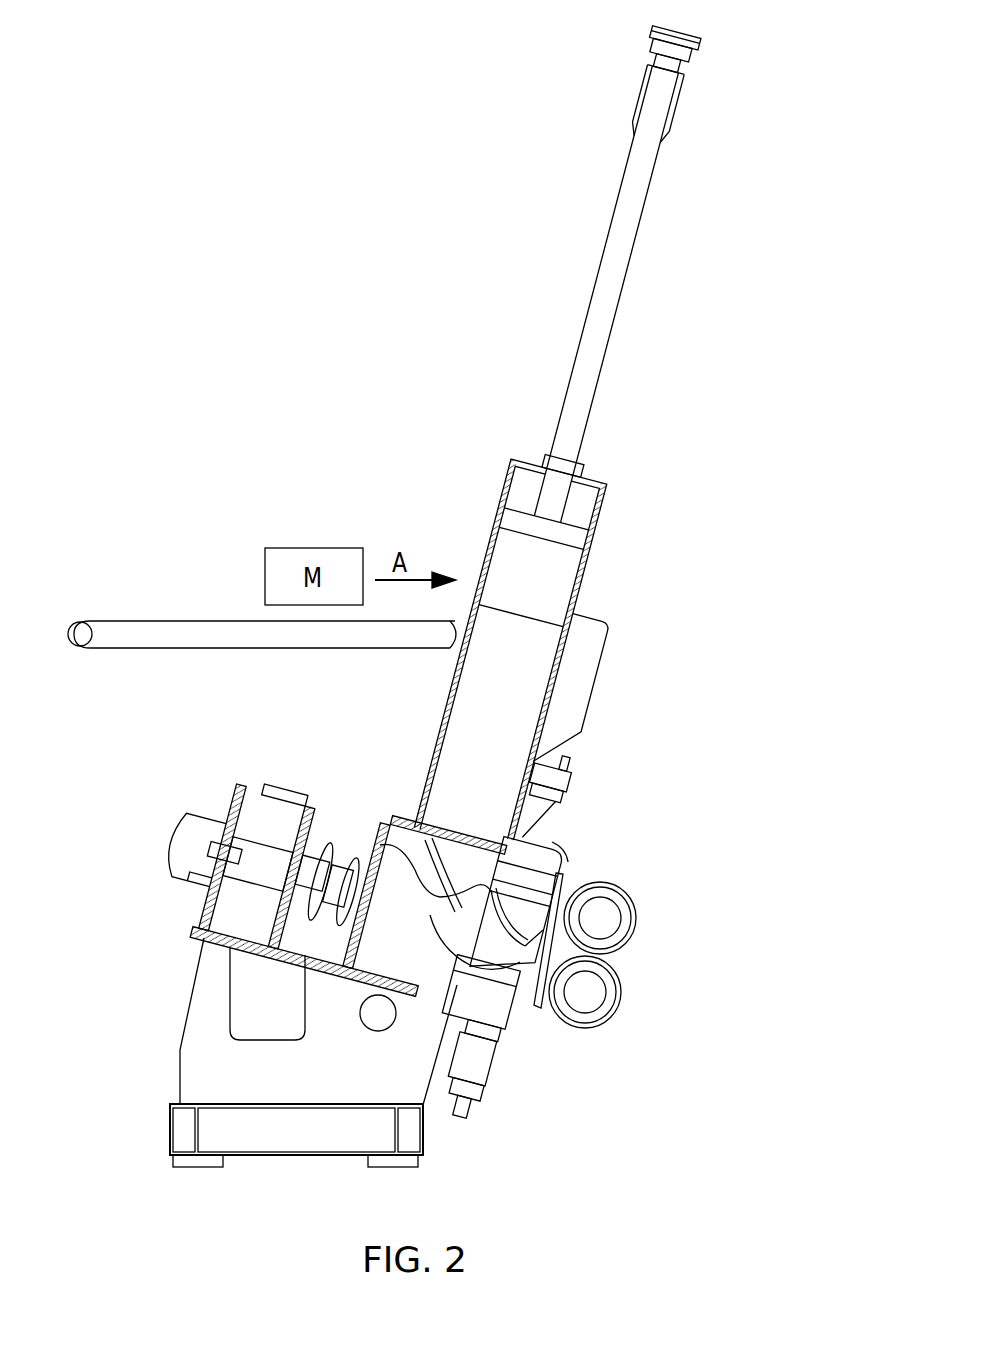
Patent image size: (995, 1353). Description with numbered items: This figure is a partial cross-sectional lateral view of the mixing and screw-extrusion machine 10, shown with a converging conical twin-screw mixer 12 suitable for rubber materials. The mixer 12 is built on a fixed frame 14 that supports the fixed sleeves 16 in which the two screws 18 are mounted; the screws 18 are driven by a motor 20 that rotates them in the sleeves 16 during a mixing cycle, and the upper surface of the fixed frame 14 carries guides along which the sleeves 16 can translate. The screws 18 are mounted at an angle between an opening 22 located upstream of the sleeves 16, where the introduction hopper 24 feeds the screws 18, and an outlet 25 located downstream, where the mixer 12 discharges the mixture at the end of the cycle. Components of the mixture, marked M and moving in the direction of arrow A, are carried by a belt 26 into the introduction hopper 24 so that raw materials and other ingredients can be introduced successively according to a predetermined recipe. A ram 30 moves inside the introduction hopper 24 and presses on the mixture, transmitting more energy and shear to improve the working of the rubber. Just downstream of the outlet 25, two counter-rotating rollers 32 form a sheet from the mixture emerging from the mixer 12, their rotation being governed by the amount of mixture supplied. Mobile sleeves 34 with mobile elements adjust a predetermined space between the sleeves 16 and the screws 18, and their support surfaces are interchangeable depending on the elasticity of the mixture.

The mixing and screw-extrusion machine 10 is at (742, 222).
The converging conical twin-screw mixer 12 is at (228, 915).
The fixed frame 14 is at (196, 1065).
The fixed sleeves 16 is at (553, 833).
The screws 18 is at (395, 888).
The motor 20 is at (192, 837).
The opening 22 is at (437, 862).
The introduction hopper 24 is at (527, 713).
The outlet 25 is at (548, 1010).
The belt 26 is at (120, 628).
The ram 30 is at (563, 568).
The counter-rotating rollers 32 is at (621, 992).
The mobile sleeves 34 is at (507, 1013).